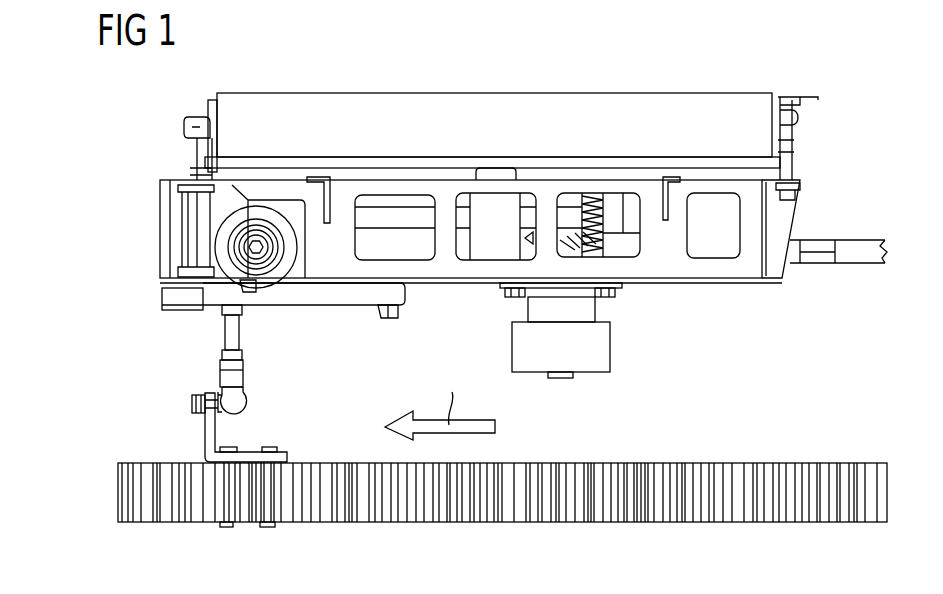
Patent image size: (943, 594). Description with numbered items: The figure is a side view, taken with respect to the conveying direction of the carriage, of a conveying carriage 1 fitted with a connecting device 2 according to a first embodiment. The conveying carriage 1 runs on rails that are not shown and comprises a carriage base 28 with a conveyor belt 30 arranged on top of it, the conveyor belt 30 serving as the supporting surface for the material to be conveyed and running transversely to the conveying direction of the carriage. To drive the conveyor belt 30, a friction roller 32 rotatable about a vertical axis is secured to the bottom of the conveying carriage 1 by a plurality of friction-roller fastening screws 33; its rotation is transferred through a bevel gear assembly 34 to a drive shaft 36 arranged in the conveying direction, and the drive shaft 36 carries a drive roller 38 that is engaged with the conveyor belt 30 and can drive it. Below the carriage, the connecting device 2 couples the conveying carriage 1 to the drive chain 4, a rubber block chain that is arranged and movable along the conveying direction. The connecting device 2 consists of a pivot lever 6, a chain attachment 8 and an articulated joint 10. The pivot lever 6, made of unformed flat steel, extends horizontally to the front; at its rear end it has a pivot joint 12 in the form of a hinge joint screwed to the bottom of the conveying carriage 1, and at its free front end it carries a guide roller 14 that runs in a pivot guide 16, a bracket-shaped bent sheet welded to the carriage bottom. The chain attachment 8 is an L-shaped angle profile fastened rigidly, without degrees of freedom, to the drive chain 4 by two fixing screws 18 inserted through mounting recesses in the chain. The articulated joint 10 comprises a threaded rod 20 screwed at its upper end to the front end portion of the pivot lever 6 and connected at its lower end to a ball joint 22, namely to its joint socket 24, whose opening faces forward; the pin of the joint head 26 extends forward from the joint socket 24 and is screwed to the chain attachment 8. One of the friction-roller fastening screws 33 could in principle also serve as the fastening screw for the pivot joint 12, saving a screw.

The conveying carriage 1 is at (420, 78).
The connecting device 2 is at (172, 380).
The drive chain 4 is at (686, 464).
The pivot lever 6 is at (360, 305).
The chain attachment 8 is at (205, 441).
The articulated joint 10 is at (244, 375).
The pivot joint 12 is at (400, 313).
The guide roller 14 is at (160, 299).
The pivot guide 16 is at (190, 312).
The fixing screws 18 is at (226, 527).
The threaded rod 20 is at (244, 333).
The ball joint 22 is at (257, 422).
The joint socket 24 is at (244, 405).
The joint head 26 is at (192, 405).
The carriage base 28 is at (735, 275).
The conveyor belt 30 is at (752, 100).
The friction roller 32 is at (590, 365).
The friction-roller fastening screws 33 is at (512, 297).
The bevel gear assembly 34 is at (589, 200).
The drive shaft 36 is at (395, 214).
The drive roller 38 is at (498, 214).